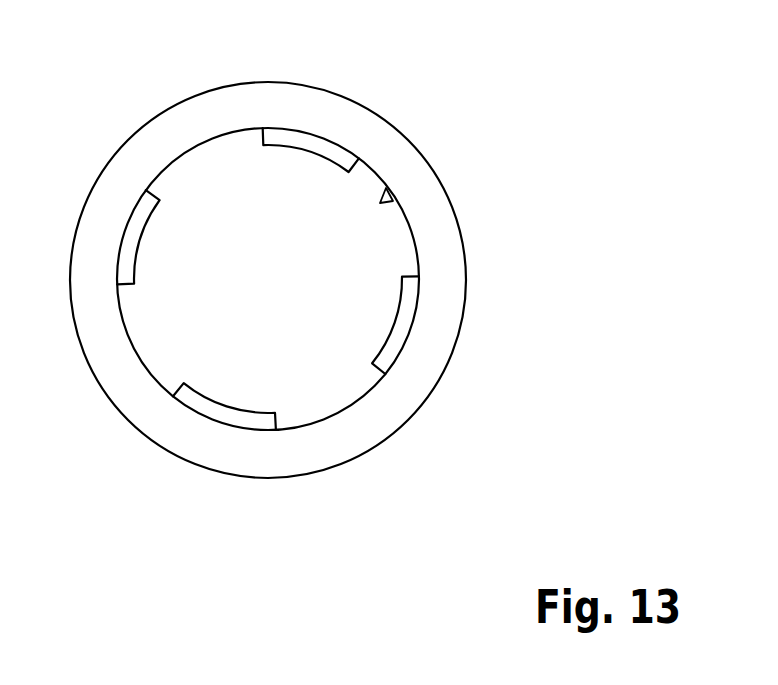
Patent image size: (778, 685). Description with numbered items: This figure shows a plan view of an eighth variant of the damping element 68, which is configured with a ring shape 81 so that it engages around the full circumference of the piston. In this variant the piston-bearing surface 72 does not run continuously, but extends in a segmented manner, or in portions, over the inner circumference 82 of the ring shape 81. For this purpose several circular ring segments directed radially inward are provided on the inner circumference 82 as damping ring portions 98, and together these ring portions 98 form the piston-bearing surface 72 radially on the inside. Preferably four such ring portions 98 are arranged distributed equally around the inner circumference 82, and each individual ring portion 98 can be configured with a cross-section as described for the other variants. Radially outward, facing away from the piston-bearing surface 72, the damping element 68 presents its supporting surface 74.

The damping element 68 is at (177, 135).
The supporting surface 74 is at (262, 80).
The ring shape 81 is at (252, 243).
The piston-bearing surface 72 is at (304, 178).
The inner circumference 82 is at (393, 199).
The damping ring portions 98 is at (407, 309).